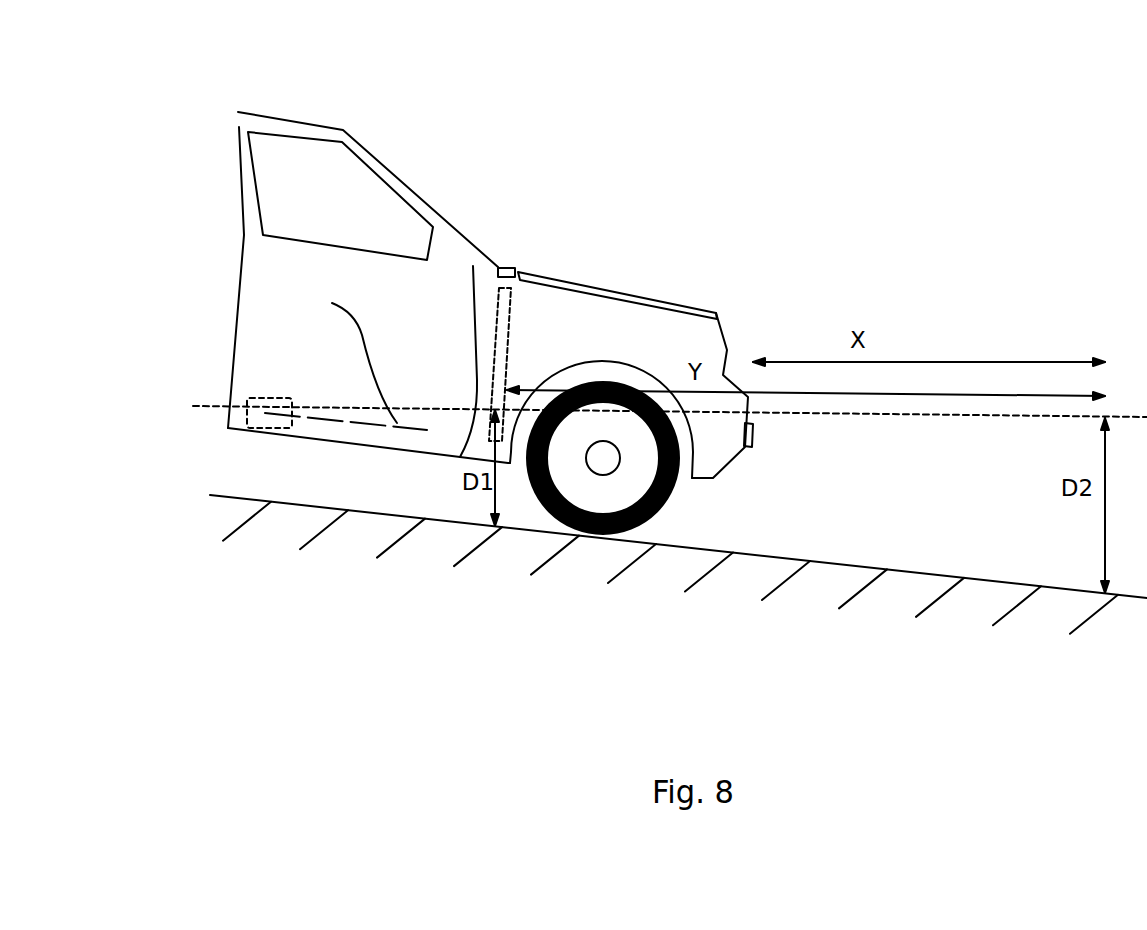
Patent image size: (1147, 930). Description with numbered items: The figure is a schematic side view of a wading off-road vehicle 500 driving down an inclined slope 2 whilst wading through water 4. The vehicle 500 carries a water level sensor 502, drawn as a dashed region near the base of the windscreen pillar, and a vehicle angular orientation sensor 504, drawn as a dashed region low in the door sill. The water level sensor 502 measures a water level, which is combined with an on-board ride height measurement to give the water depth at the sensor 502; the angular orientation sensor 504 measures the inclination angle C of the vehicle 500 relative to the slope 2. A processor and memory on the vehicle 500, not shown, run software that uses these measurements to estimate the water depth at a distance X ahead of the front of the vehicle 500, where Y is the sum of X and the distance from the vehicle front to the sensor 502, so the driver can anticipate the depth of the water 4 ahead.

The vehicle 500 is at (525, 108).
The water level sensor 502 is at (507, 320).
The vehicle angular orientation sensor 504 is at (247, 397).
The water 4 is at (928, 417).
The inclined slope 2 is at (372, 515).